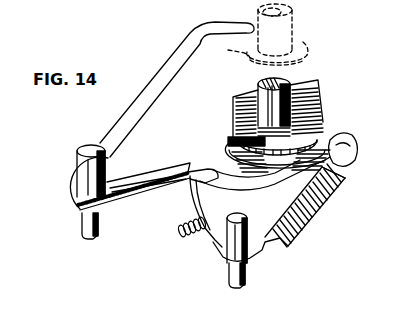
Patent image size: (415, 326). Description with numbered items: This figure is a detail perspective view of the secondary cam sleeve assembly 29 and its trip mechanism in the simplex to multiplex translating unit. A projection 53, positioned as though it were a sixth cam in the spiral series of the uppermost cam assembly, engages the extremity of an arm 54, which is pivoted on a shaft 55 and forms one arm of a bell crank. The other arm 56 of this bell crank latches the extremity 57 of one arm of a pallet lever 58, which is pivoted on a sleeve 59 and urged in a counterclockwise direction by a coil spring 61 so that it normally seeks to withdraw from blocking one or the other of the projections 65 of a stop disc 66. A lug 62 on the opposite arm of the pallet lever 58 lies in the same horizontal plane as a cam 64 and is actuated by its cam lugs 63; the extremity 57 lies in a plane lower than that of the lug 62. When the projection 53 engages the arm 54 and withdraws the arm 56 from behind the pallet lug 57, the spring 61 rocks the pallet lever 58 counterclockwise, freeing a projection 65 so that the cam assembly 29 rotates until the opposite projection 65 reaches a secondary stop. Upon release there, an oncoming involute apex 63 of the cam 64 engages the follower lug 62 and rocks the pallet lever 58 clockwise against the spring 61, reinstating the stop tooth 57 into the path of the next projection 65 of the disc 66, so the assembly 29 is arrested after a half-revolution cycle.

The secondary cam assembly 29 is at (297, 72).
The projection 53 is at (236, 48).
The arm 54 is at (130, 123).
The shaft 55 is at (96, 234).
The arm 56 is at (143, 183).
The extremity 57 is at (200, 170).
The pallet lever 58 is at (284, 238).
The sleeve 59 is at (238, 235).
The coil spring 61 is at (181, 233).
The lug 62 is at (343, 134).
The cam lugs 63 is at (236, 130).
The cam 64 is at (320, 117).
The projections 65 is at (216, 179).
The stop disc 66 is at (300, 204).